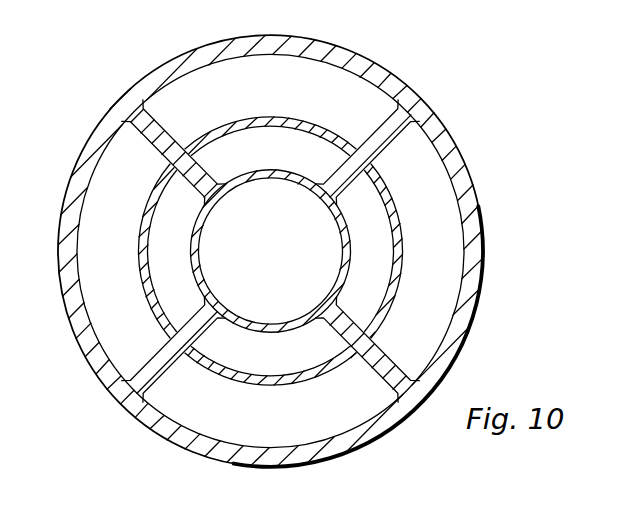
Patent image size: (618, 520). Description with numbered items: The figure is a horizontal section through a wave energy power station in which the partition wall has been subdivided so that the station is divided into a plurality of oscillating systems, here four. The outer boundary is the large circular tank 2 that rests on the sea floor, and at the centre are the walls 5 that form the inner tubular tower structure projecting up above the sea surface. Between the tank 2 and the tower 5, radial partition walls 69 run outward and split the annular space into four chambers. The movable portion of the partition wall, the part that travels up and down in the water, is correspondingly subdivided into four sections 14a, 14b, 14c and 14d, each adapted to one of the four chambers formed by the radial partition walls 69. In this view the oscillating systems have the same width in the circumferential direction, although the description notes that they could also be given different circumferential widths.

The tank 2 is at (493, 230).
The walls forming inner tubular tower structure 5 is at (290, 173).
The radial partition walls 69 is at (397, 108).
The section of movable partition wall 14a is at (391, 209).
The section of movable partition wall 14b is at (270, 385).
The section of movable partition wall 14c is at (155, 317).
The section of movable partition wall 14d is at (196, 146).